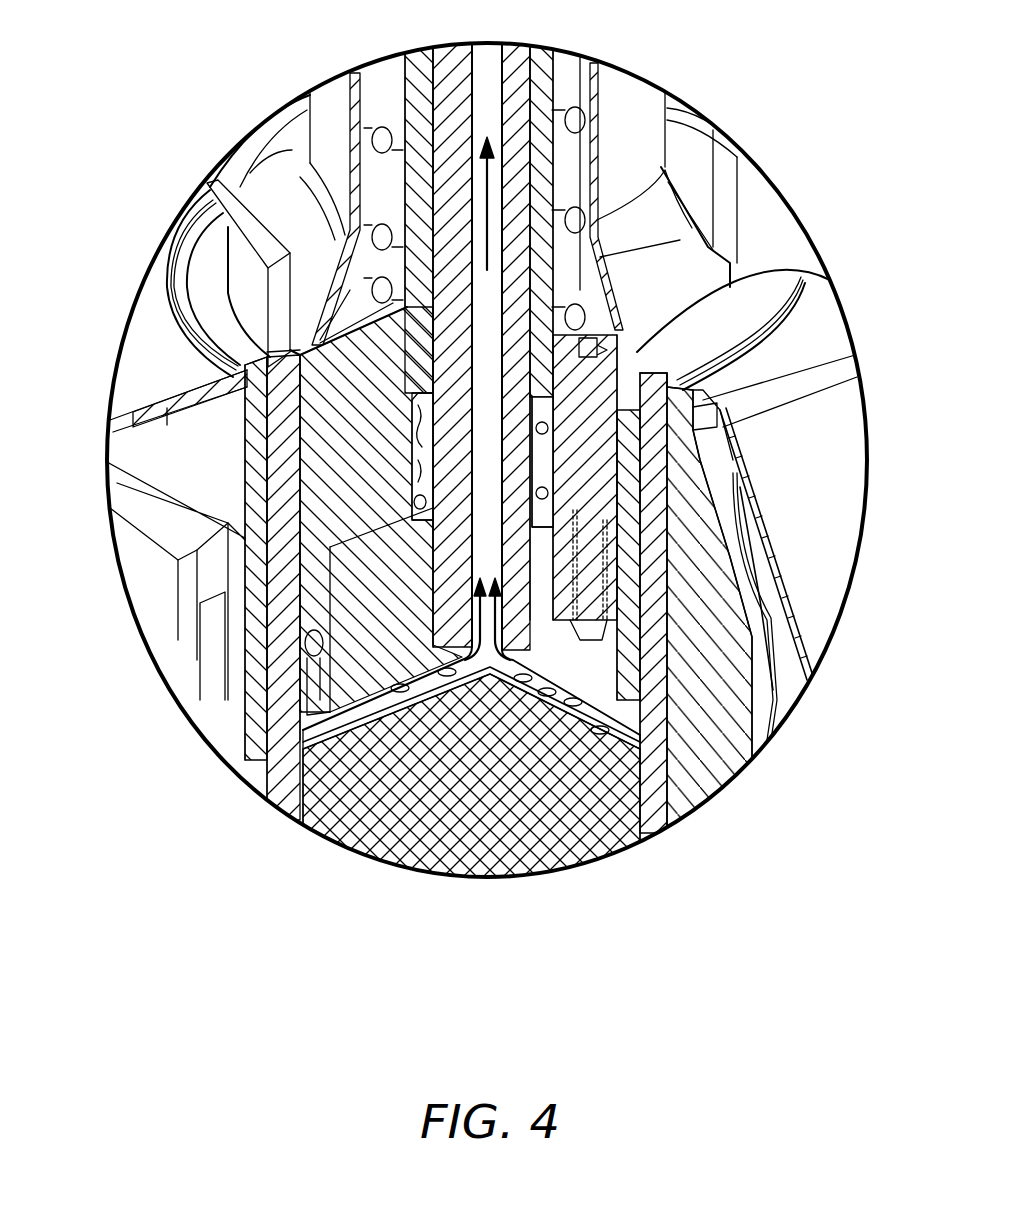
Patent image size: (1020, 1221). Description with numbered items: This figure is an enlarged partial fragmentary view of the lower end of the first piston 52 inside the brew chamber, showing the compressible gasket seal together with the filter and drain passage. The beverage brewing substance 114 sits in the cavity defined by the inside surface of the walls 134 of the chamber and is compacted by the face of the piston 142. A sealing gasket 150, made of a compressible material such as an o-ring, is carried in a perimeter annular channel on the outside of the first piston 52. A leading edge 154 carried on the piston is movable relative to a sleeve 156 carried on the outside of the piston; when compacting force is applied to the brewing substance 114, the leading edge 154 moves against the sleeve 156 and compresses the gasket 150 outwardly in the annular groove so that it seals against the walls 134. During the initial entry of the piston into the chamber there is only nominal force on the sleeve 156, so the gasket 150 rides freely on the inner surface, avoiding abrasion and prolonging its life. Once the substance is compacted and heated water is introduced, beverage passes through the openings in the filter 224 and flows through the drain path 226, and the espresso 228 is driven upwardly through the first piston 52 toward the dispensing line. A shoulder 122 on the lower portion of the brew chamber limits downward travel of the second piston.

The first piston 52 is at (280, 196).
The beverage brewing substance 114 is at (360, 807).
The shoulder 122 is at (460, 700).
The walls 134 is at (290, 763).
The face of the piston 142 is at (393, 700).
The sealing gasket 150 is at (312, 643).
The leading edge 154 is at (308, 700).
The sleeve 156 is at (352, 417).
The filter 224 is at (510, 678).
The drain path 226 is at (490, 677).
The espresso 228 is at (487, 213).